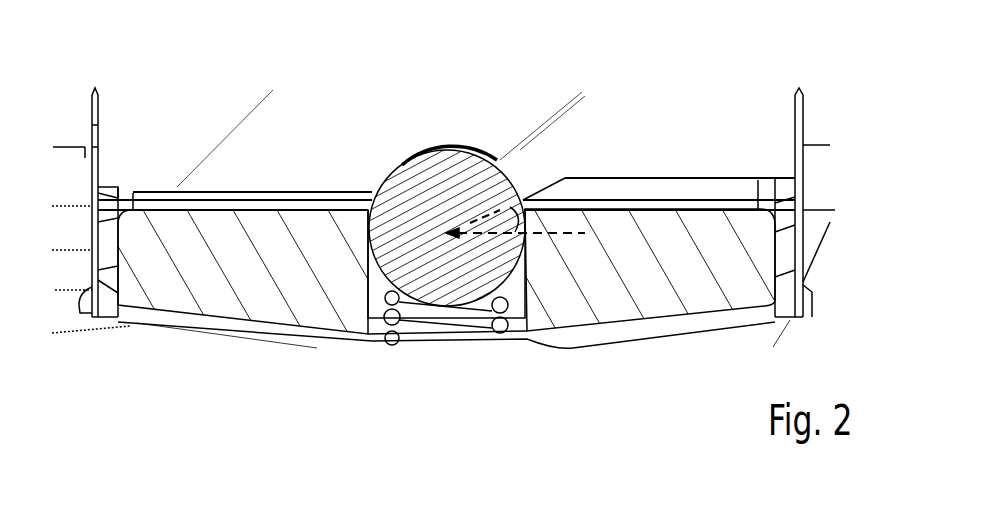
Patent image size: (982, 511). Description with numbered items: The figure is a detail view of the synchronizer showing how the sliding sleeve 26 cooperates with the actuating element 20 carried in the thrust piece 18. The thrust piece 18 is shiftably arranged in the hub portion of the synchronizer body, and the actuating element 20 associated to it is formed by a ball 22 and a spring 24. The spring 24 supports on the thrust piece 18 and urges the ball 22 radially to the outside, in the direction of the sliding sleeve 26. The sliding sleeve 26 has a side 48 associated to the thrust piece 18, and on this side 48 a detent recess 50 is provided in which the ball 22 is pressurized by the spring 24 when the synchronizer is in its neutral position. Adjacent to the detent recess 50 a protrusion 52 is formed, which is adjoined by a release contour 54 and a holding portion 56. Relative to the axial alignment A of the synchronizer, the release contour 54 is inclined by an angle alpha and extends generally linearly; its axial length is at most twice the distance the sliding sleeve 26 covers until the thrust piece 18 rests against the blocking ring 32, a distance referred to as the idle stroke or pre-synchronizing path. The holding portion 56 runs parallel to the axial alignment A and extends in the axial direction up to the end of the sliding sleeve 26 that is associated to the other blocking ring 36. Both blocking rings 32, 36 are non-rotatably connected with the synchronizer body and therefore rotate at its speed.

The thrust piece 18 is at (743, 233).
The actuating element 20 is at (416, 346).
The ball 22 is at (422, 173).
The spring 24 is at (498, 331).
The sliding sleeve 26 is at (143, 103).
The blocking ring 32 is at (72, 152).
The blocking ring 36 is at (817, 223).
The side 48 is at (266, 198).
The detent recess 50 is at (452, 166).
The protrusion 52 is at (537, 197).
The release contour 54 is at (560, 195).
The holding portion 56 is at (629, 199).
The axial alignment A is at (553, 237).